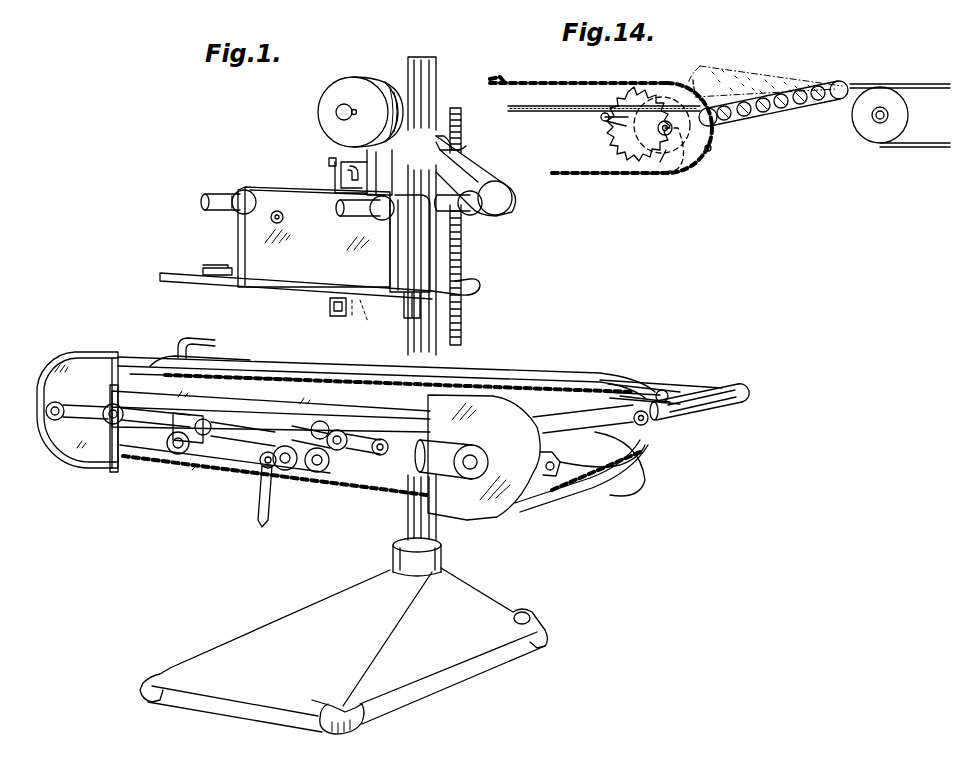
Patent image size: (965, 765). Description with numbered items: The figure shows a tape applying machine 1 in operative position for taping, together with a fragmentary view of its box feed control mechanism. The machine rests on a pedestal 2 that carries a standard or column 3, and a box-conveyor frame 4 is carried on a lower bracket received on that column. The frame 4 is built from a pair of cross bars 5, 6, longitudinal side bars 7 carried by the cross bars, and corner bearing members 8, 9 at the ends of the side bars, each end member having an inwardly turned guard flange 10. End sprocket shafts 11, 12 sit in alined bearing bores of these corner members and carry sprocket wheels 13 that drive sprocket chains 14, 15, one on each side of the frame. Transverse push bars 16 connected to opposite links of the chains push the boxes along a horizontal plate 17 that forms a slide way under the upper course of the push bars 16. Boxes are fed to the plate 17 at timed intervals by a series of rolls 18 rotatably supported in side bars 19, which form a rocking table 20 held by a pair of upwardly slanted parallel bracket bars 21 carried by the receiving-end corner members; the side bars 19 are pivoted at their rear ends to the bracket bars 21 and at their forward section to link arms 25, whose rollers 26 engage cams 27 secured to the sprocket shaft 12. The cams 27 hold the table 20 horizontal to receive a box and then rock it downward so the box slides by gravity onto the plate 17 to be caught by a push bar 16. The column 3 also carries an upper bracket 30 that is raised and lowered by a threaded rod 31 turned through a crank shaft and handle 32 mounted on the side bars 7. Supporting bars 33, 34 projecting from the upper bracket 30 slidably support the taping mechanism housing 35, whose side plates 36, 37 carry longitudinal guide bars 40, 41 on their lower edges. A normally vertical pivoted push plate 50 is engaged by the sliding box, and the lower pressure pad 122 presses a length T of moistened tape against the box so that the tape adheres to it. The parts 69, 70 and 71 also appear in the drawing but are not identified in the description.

In FIG. 1, the tape applying machine 1 is at (183, 499).
In FIG. 1, the pedestal 2 is at (344, 636).
In FIG. 1, the standard or column 3 is at (436, 98).
In FIG. 1, the box-conveyor frame 4 is at (520, 363).
In FIG. 1, the cross bar 5 is at (175, 470).
In FIG. 1, the cross bar 6 is at (312, 474).
In FIG. 1, the longitudinal side bars 7 is at (150, 423).
In FIG. 1, the corner bearing member 8 is at (57, 421).
In FIG. 1, the corner bearing member 9 is at (466, 474).
In FIG. 14, the corner bearing member 9 is at (655, 138).
In FIG. 1, the guard flange 10 is at (92, 352).
In FIG. 1, the end sprocket shaft 11 is at (112, 386).
In FIG. 1, the end sprocket shaft 12 is at (200, 350).
In FIG. 14, the end sprocket shaft 12 is at (657, 128).
In FIG. 1, the sprocket wheel 13 is at (625, 470).
In FIG. 1, the sprocket chain 14 is at (212, 352).
In FIG. 14, the sprocket chain 14 is at (588, 82).
In FIG. 1, the sprocket chain 15 is at (226, 472).
In FIG. 1, the transverse push bars 16 is at (574, 502).
In FIG. 14, the transverse push bars 16 is at (505, 78).
In FIG. 1, the horizontal plate 17 is at (271, 420).
In FIG. 14, the horizontal plate 17 is at (566, 111).
In FIG. 1, the rolls 18 is at (680, 380).
In FIG. 14, the rolls 18 is at (776, 108).
In FIG. 1, the side bars 19 is at (668, 388).
In FIG. 14, the side bars 19 is at (780, 72).
In FIG. 1, the rocking table 20 is at (673, 421).
In FIG. 14, the rocking table 20 is at (739, 143).
In FIG. 1, the bracket bars 21 is at (594, 420).
In FIG. 14, the link arms 25 is at (693, 80).
In FIG. 14, the rollers 26 is at (632, 96).
In FIG. 14, the cams 27 is at (668, 160).
In FIG. 1, the upper column unit or bracket 30 is at (485, 171).
In FIG. 1, the threaded rod 31 is at (462, 129).
In FIG. 1, the crank shaft and handle 32 is at (270, 515).
In FIG. 1, the supporting bar 33 is at (205, 194).
In FIG. 1, the supporting bar 34 is at (365, 216).
In FIG. 1, the taping mechanism housing 35 is at (233, 232).
In FIG. 1, the side plate 36 is at (317, 234).
In FIG. 1, the side plate 37 is at (410, 243).
In FIG. 1, the guide bar 40 is at (228, 283).
In FIG. 1, the guide bar 41 is at (216, 265).
In FIG. 1, the push plate 50 is at (418, 308).
In FIG. 1, the wheel bracket 69 is at (360, 172).
In FIG. 1, the hub 70 is at (349, 104).
In FIG. 1, the hand wheel 71 is at (342, 80).
In FIG. 1, the lower pressure pad 122 is at (338, 318).
In FIG. 1, the length of moistened tape T is at (373, 328).